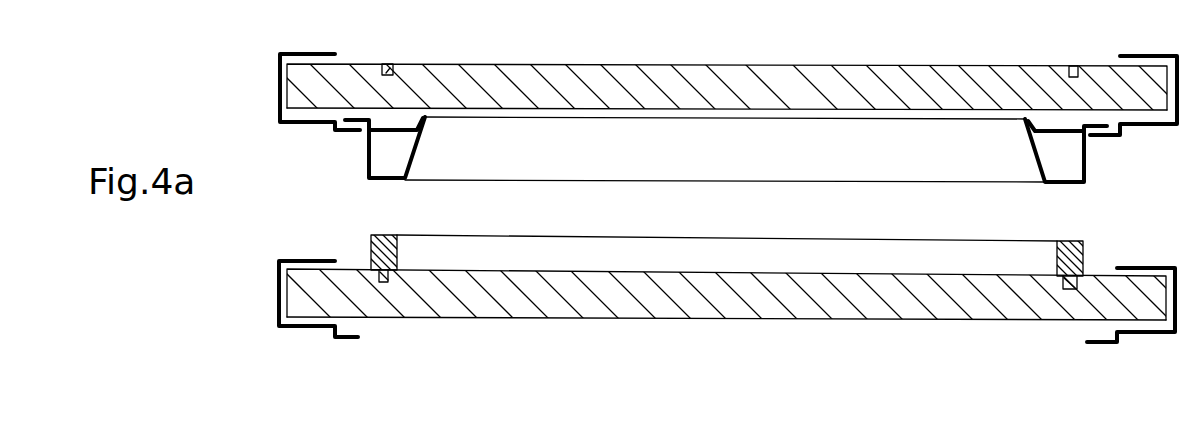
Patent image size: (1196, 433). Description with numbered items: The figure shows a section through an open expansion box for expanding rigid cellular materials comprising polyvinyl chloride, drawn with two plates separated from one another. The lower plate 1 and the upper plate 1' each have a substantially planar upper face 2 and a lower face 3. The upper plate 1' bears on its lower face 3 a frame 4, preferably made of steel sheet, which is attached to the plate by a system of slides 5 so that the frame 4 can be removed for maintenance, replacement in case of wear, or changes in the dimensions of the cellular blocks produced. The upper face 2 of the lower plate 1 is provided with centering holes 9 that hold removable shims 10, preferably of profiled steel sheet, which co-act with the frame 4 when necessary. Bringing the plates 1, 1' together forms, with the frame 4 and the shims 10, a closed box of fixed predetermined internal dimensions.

The plate 1 is at (727, 310).
The plate 1' is at (725, 101).
The upper face 2 is at (688, 65).
The lower face 3 is at (320, 108).
The frame 4 is at (369, 162).
The slides 5 is at (279, 81).
The centering holes 9 is at (390, 63).
The shims 10 is at (371, 250).